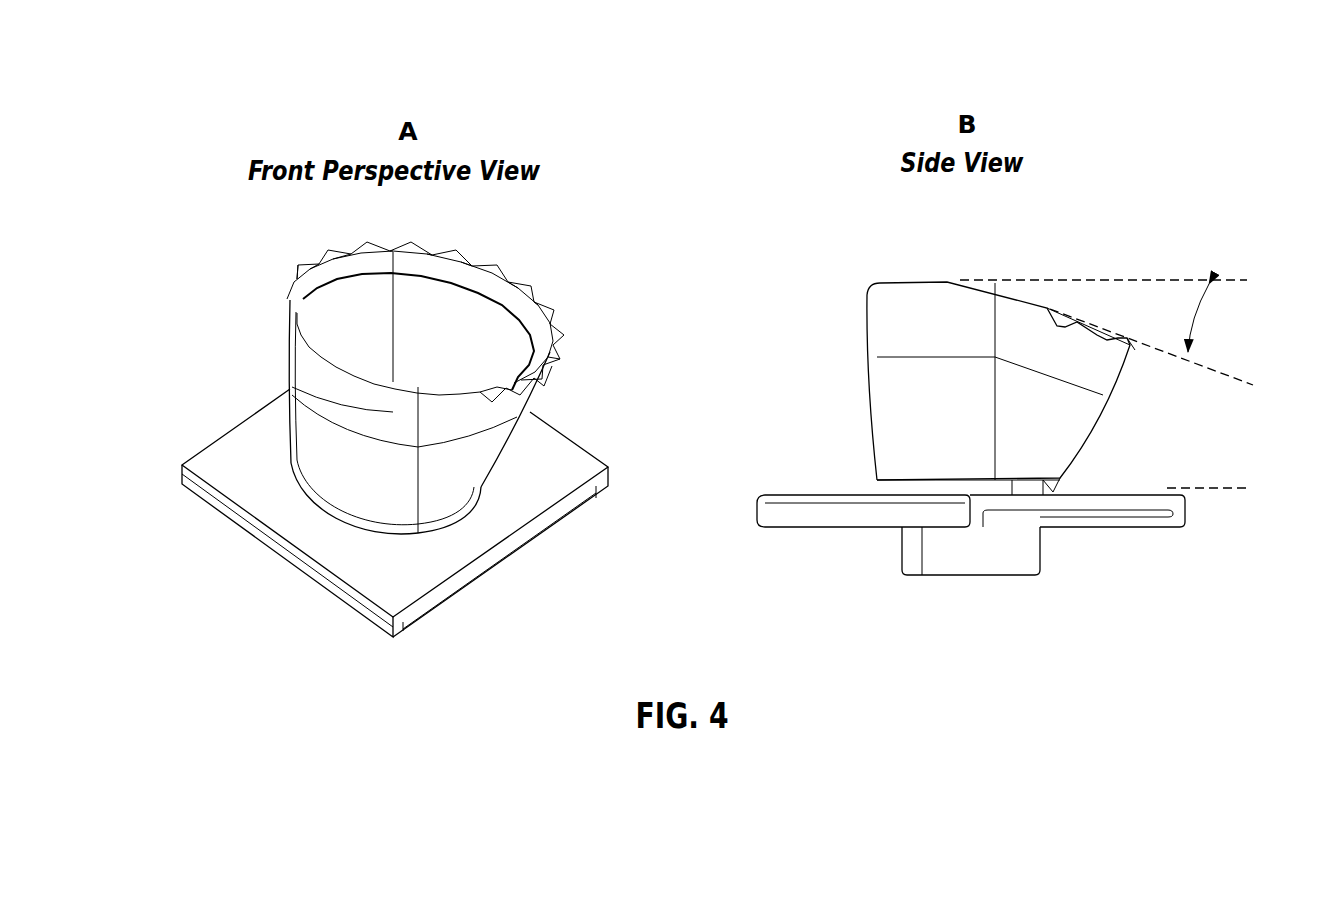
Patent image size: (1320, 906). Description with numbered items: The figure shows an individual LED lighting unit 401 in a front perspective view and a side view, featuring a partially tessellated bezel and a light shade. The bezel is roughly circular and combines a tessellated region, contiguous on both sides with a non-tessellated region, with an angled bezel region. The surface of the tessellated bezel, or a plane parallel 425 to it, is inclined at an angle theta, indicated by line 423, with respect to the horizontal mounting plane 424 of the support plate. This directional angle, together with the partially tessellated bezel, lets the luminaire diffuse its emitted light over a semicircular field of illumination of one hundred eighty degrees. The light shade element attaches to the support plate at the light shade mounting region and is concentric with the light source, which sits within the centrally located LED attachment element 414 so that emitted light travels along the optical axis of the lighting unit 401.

The lighting unit 401 is at (176, 172).
The LED attachment element 414 is at (966, 553).
The line of angle of inclination 423 is at (1178, 356).
The horizontal mounting plane 424 is at (1237, 491).
The plane parallel to tessellated bezel surface 425 is at (1133, 279).